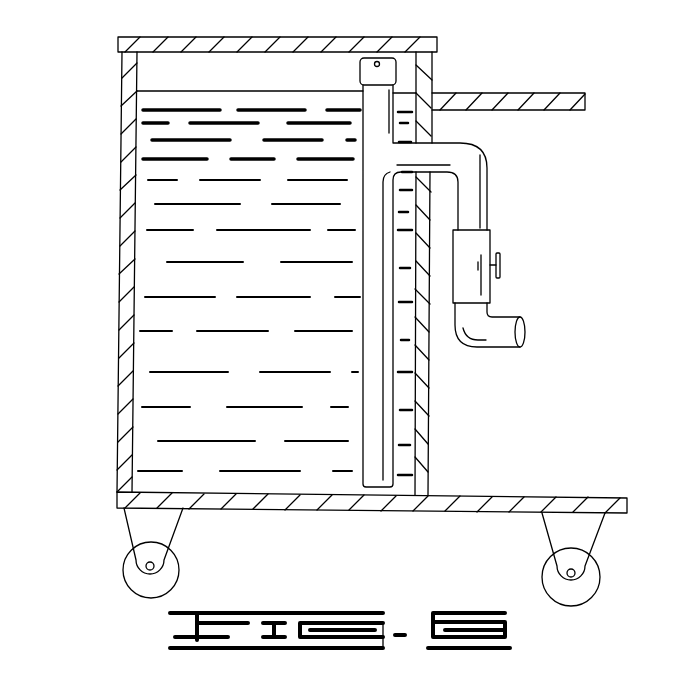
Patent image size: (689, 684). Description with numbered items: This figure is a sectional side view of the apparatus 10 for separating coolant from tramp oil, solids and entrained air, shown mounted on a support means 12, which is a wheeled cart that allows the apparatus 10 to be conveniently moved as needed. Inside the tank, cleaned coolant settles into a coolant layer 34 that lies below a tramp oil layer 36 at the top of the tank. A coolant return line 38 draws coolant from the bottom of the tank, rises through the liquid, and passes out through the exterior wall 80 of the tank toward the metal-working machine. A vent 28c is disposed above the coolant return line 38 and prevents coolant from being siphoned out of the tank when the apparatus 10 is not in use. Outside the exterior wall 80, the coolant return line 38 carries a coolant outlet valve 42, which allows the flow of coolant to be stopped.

The apparatus 10 is at (182, 65).
The support means 12 is at (518, 498).
The vent 28c is at (362, 66).
The coolant layer 34 is at (152, 267).
The tramp oil layer 36 is at (157, 98).
The coolant return line 38 is at (487, 185).
The coolant outlet valve 42 is at (503, 258).
The exterior wall 80 is at (124, 372).